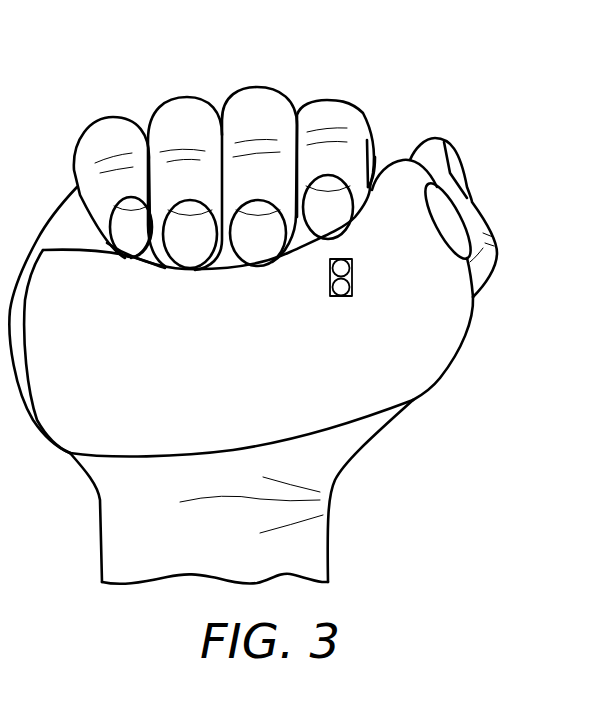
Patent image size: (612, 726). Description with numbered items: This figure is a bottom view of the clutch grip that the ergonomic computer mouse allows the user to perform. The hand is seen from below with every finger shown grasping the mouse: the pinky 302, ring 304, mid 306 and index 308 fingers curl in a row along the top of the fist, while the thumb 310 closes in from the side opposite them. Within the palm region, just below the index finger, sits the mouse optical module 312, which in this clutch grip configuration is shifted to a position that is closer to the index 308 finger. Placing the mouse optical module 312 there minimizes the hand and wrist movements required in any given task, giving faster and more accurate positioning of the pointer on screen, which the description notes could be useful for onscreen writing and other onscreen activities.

The pinky 302 is at (108, 103).
The ring 304 is at (186, 83).
The mid 306 is at (258, 73).
The index 308 is at (330, 86).
The thumb 310 is at (433, 123).
The mouse optical module 312 is at (357, 305).